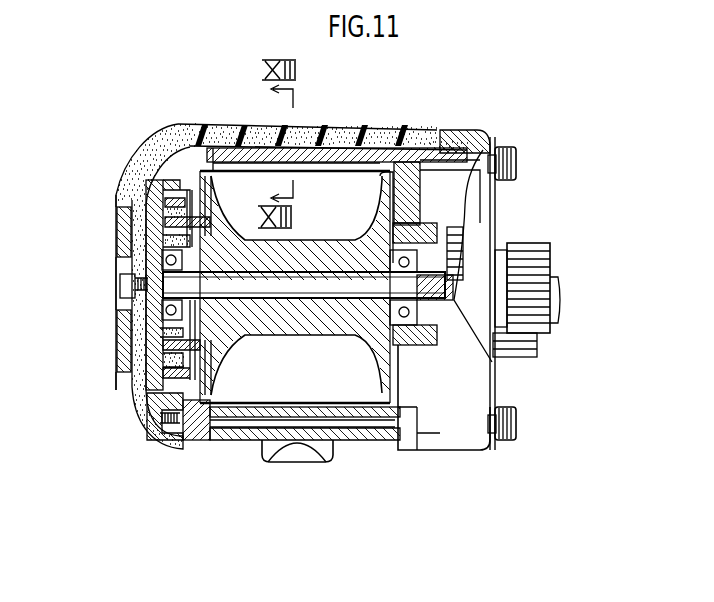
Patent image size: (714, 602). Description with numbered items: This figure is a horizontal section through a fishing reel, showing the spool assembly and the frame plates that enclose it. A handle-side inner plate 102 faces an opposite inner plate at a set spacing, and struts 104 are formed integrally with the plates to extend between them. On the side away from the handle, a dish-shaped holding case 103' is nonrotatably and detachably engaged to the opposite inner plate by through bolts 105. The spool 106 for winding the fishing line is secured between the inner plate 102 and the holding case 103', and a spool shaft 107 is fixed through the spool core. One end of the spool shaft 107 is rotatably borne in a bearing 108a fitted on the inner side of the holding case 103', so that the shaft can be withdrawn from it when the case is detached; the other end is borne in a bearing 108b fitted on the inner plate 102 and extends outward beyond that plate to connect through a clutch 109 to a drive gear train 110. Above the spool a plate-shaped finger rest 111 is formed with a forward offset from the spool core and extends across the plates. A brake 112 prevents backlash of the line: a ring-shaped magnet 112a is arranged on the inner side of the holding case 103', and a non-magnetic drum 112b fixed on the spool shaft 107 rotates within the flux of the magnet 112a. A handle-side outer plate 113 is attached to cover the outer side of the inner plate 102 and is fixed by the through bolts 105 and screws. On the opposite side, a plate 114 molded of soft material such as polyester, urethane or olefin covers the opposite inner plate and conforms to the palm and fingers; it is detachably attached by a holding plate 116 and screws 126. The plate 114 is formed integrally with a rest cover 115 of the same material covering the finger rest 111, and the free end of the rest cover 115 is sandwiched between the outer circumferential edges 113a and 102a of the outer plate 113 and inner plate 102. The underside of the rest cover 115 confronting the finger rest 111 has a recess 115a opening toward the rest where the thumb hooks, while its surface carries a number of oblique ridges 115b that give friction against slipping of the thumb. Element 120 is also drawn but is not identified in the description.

The handle-side inner plate 102 is at (480, 183).
The outer circumferential edge of handle-side inner plate 102a is at (483, 150).
The holding case 103' is at (80, 279).
The struts 104 is at (367, 433).
The through bolts 105 is at (516, 160).
The spool 106 is at (260, 317).
The spool shaft 107 is at (328, 282).
The bearing 108a is at (150, 320).
The bearing 108b is at (402, 315).
The clutch 109 is at (405, 335).
The drive gear train 110 is at (447, 233).
The finger rest 111 is at (353, 132).
The brake 112 is at (147, 200).
The magnet 112a is at (162, 240).
The non-magnetic drum 112b is at (135, 213).
The handle-side outer plate 113 is at (457, 413).
The outer circumferential edge of handle-side outer plate 113a is at (453, 130).
The opposite-side plate 114 is at (140, 410).
The rest cover 115 is at (310, 128).
The recess 115a is at (402, 130).
The oblique ridges 115b is at (252, 125).
The holding plate 116 is at (120, 323).
The projection 120 is at (297, 443).
The screws 126 is at (122, 290).